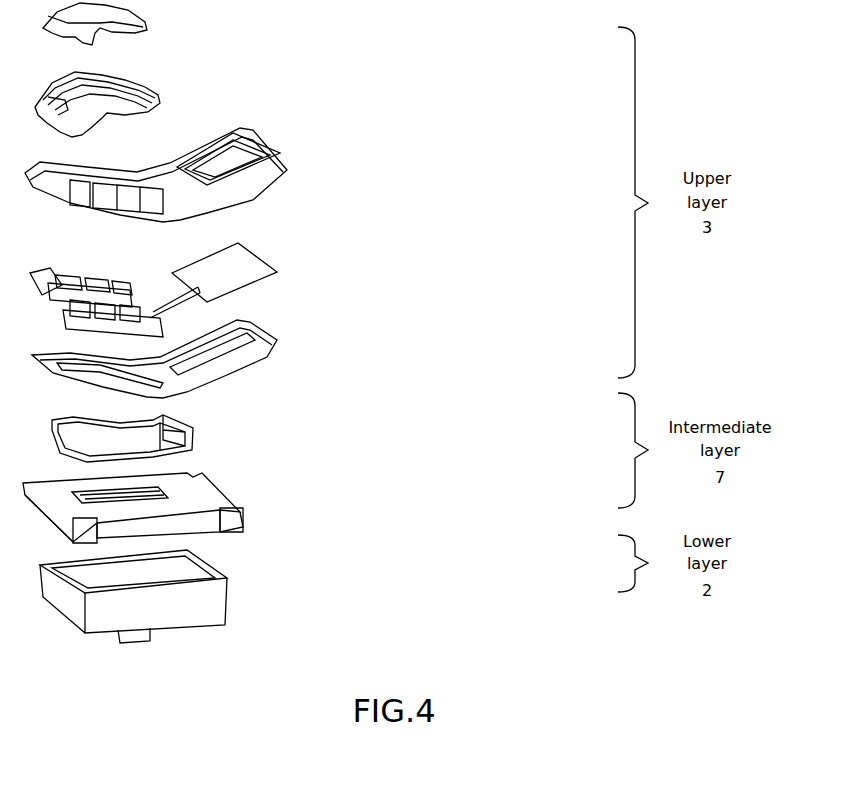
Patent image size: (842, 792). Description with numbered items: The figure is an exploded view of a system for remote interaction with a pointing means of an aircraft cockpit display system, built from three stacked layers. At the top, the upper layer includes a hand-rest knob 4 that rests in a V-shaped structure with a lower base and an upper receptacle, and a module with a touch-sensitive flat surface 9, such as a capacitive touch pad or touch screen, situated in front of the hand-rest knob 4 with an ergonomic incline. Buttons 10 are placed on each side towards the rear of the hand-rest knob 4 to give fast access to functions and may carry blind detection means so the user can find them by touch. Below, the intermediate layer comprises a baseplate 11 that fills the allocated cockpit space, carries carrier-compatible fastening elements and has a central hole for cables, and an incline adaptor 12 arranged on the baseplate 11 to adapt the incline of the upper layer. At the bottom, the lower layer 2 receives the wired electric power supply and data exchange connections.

The hand-rest knob 4 is at (137, 93).
The module with a touch-sensitive flat surface 9 is at (228, 268).
The buttons 10 is at (152, 315).
The incline adaptor 12 is at (179, 431).
The baseplate 11 is at (191, 490).
The lower layer 2 is at (170, 578).